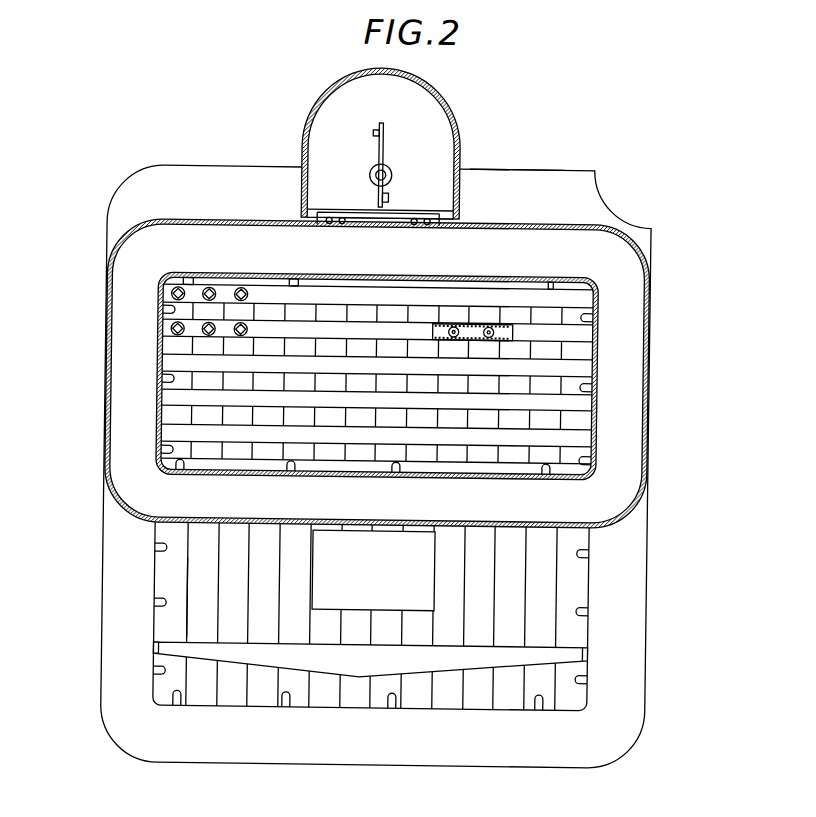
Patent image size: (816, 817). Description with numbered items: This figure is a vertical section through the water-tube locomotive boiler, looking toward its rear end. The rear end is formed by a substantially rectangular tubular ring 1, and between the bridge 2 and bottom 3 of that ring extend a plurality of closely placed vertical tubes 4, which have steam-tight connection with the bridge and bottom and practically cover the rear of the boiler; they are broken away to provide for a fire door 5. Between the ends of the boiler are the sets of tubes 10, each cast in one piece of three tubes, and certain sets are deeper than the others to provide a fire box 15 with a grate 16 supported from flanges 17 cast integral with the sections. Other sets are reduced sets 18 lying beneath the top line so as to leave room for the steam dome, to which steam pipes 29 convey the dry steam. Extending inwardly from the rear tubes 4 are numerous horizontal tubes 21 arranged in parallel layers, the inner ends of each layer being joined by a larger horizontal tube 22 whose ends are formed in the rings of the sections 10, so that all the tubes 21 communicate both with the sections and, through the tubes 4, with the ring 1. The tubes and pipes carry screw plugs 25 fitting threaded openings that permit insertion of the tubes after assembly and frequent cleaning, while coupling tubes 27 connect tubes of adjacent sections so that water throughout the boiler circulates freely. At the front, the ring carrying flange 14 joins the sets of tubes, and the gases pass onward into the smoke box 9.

The rectangular tubular ring 1 is at (131, 529).
The bridge 2 is at (490, 175).
The bottom 3 is at (372, 756).
The vertical tubes 4 is at (170, 590).
The fire door 5 is at (373, 570).
The smoke box 9 is at (333, 108).
The sets of tubes 10 is at (376, 466).
The flange 14 is at (236, 700).
The fire box 15 is at (189, 621).
The grate 16 is at (370, 661).
The flanges 17 is at (156, 651).
The reduced sets 18 is at (185, 239).
The horizontal tubes 21 is at (553, 330).
The horizontal connecting tube 22 is at (190, 436).
The screw plugs 25 is at (168, 331).
The coupling tubes 27 is at (165, 389).
The steam pipes 29 is at (388, 175).